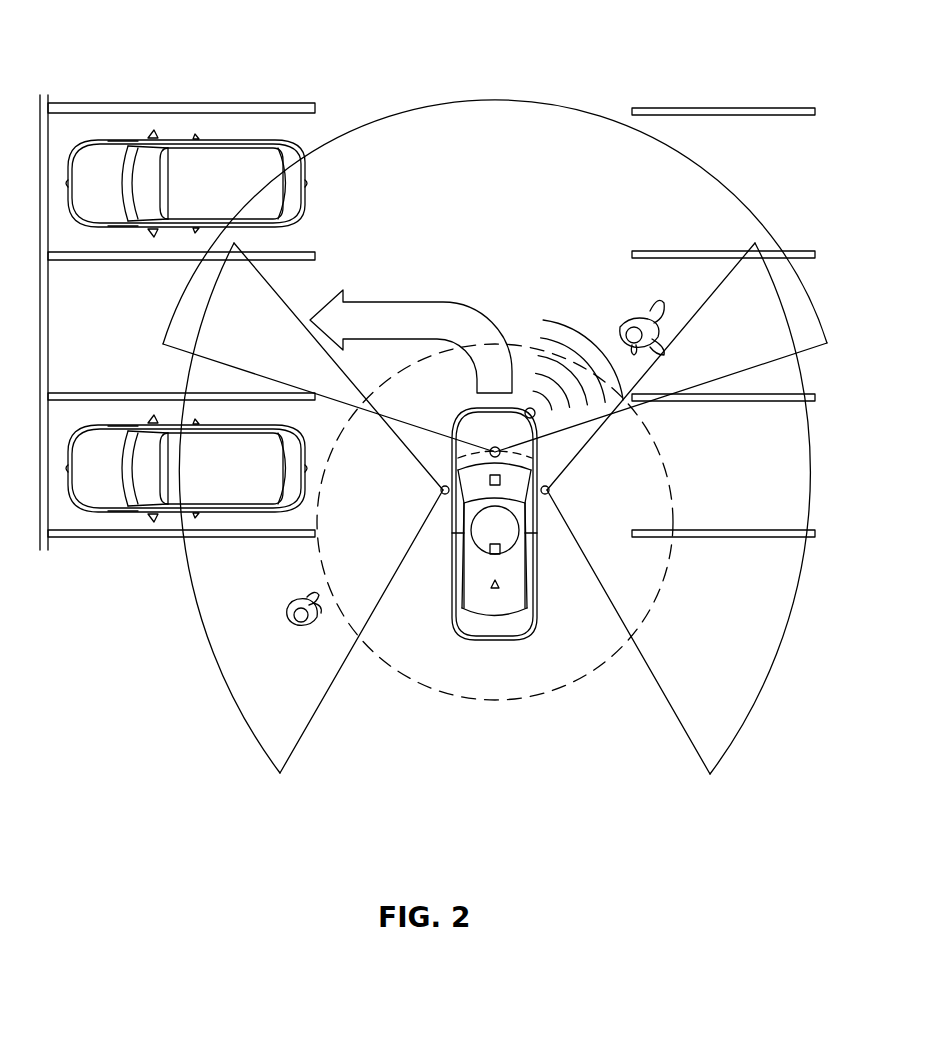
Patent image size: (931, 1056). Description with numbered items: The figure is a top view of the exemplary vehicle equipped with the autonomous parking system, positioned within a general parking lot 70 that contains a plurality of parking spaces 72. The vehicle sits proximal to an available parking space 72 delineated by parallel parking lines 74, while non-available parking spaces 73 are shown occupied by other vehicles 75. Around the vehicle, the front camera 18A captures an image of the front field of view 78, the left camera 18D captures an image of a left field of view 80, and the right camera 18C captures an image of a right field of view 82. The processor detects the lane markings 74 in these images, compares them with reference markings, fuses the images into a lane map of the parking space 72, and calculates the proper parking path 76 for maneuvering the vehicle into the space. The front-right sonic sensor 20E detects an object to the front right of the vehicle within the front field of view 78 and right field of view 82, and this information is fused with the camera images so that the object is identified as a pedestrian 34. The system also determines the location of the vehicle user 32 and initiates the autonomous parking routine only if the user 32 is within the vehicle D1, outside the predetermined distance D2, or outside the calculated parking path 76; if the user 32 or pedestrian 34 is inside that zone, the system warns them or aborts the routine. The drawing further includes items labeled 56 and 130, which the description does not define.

The parking lot 70 is at (551, 65).
The front field of view 78 is at (435, 105).
The left field of view 80 is at (232, 700).
The right field of view 82 is at (735, 740).
The parking space 72 is at (770, 133).
The parking lines 74 is at (110, 255).
The non-available parking space 73 is at (63, 517).
The vehicle 75 is at (213, 163).
The parking path 76 is at (380, 312).
The front-right sonic sensor 20E is at (531, 407).
The front camera 18A is at (492, 445).
The right camera 18C is at (549, 490).
The left camera 18D is at (441, 490).
The field of view line 56 is at (548, 432).
The pedestrian 34 is at (645, 320).
The vehicle user 32 is at (290, 605).
The predicted pedestrian position 130 is at (327, 590).
The within-vehicle condition D1 is at (483, 555).
The predetermined distance D2 is at (515, 712).